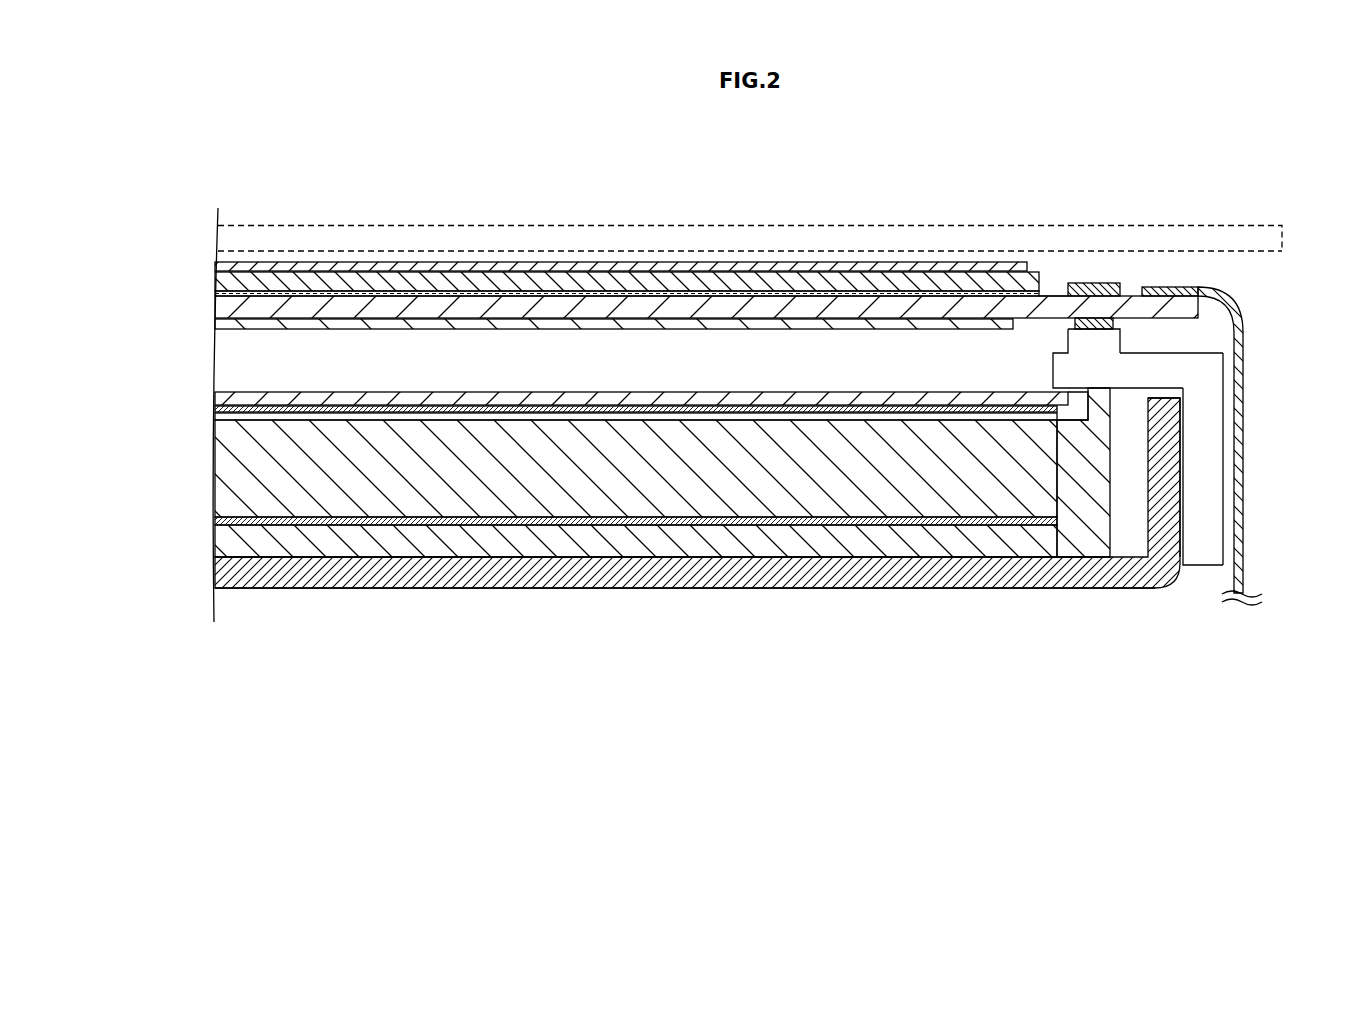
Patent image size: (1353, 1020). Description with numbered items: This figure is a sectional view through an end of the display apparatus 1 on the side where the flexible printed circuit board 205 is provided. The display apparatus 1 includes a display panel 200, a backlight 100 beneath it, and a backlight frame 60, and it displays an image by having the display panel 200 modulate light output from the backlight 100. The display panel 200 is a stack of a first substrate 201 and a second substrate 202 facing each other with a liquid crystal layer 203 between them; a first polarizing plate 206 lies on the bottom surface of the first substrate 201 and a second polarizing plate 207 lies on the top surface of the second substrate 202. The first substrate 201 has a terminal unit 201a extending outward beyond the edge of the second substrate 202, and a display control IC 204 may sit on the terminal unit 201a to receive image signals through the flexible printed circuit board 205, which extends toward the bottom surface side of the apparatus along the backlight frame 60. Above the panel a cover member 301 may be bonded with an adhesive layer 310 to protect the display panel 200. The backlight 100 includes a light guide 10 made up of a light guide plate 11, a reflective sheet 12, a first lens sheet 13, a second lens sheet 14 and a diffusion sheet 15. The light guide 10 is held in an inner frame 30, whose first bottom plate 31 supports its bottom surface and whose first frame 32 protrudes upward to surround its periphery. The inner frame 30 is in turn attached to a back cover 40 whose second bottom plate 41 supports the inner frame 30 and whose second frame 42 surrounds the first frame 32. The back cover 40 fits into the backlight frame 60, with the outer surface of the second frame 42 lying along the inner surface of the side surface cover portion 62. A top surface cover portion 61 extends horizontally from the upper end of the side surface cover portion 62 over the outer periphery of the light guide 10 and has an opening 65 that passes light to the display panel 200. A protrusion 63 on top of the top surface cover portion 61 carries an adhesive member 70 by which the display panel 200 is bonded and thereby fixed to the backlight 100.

The display apparatus 1 is at (166, 177).
The light guide 10 is at (150, 377).
The light guide plate 11 is at (222, 468).
The reflective sheet 12 is at (222, 521).
The first lens sheet 13 is at (222, 416).
The second lens sheet 14 is at (222, 409).
The diffusion sheet 15 is at (222, 399).
The inner frame 30 is at (693, 540).
The first bottom plate 31 is at (773, 540).
The first frame 32 is at (1098, 406).
The back cover 40 is at (612, 572).
The second bottom plate 41 is at (931, 572).
The second frame 42 is at (1163, 487).
The backlight frame 60 is at (1202, 447).
The top surface cover portion 61 is at (1160, 350).
The side surface cover portion 62 is at (1203, 530).
The protrusion 63 is at (1081, 338).
The opening 65 is at (547, 356).
The adhesive member 70 is at (1128, 320).
The backlight 100 is at (537, 597).
The display panel 200 is at (137, 232).
The first substrate 201 is at (222, 307).
The terminal unit 201a is at (1053, 290).
The second substrate 202 is at (222, 283).
The liquid crystal layer 203 is at (222, 293).
The display control IC 204 is at (1085, 327).
The flexible printed circuit board 205 is at (1243, 361).
The first polarizing plate 206 is at (222, 325).
The second polarizing plate 207 is at (222, 266).
The cover member 301 is at (692, 238).
The adhesive layer 310 is at (777, 257).